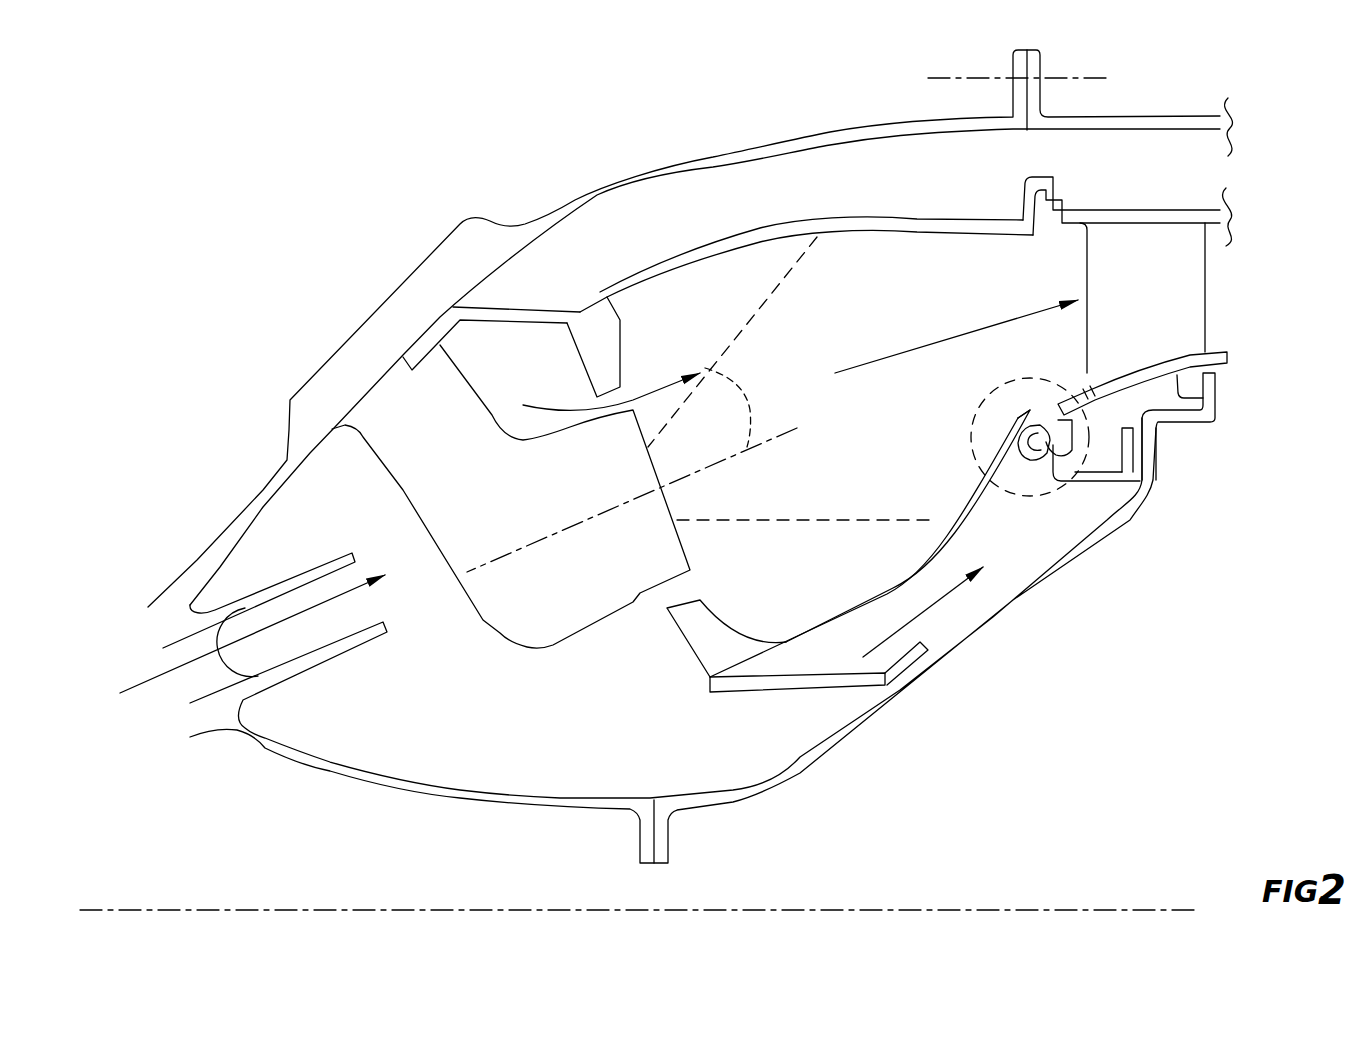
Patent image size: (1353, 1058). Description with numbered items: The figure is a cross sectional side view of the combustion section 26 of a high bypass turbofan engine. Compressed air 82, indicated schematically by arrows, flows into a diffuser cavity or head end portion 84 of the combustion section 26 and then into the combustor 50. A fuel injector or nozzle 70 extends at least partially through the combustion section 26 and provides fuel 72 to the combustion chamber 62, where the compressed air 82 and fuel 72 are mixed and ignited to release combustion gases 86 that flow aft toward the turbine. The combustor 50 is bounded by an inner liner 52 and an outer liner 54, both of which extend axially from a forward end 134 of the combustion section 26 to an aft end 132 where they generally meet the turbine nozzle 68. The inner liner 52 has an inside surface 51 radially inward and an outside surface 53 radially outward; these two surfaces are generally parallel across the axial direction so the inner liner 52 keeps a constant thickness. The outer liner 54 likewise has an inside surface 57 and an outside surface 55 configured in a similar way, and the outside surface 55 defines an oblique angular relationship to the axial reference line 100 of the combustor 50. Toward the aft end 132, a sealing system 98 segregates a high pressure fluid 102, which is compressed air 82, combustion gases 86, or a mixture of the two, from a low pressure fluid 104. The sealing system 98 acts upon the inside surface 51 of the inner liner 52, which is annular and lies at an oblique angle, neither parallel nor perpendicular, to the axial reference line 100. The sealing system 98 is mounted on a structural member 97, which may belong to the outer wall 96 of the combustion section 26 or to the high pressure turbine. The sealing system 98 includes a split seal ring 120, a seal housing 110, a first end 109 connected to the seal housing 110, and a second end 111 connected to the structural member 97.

The combustion section 26 is at (690, 105).
The combustor 50 is at (652, 256).
The inside surface 51 is at (977, 497).
The inner liner 52 is at (957, 510).
The outside surface 53 is at (865, 520).
The outer liner 54 is at (840, 213).
The outside surface 55 is at (880, 219).
The inside surface 57 is at (927, 236).
The combustion chamber 62 is at (839, 304).
The turbine nozzle 68 is at (1185, 290).
The fuel injector or nozzle 70 is at (501, 503).
The fuel 72 is at (752, 393).
The compressed air 82 is at (125, 692).
The diffuser cavity or head end portion 84 is at (303, 520).
The combustion gases 86 is at (938, 340).
The outer wall 96 is at (913, 121).
The structural member 97 is at (1137, 457).
The sealing system 98 is at (1042, 483).
The axial reference line 100 is at (1060, 73).
The high pressure fluid 102 is at (1010, 543).
The low pressure fluid 104 is at (1050, 403).
The first end 109 is at (1060, 483).
The seal housing 110 is at (1015, 447).
The second end 111 is at (1110, 480).
The split seal ring 120 is at (1040, 420).
The aft end 132 is at (1027, 407).
The forward end 134 is at (784, 640).